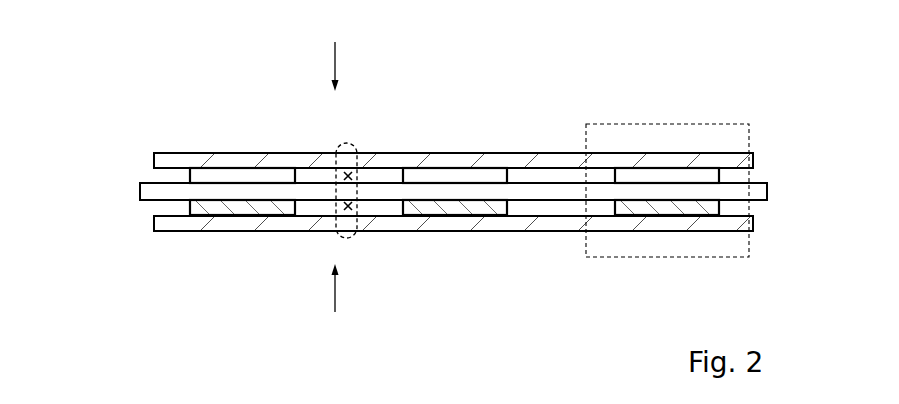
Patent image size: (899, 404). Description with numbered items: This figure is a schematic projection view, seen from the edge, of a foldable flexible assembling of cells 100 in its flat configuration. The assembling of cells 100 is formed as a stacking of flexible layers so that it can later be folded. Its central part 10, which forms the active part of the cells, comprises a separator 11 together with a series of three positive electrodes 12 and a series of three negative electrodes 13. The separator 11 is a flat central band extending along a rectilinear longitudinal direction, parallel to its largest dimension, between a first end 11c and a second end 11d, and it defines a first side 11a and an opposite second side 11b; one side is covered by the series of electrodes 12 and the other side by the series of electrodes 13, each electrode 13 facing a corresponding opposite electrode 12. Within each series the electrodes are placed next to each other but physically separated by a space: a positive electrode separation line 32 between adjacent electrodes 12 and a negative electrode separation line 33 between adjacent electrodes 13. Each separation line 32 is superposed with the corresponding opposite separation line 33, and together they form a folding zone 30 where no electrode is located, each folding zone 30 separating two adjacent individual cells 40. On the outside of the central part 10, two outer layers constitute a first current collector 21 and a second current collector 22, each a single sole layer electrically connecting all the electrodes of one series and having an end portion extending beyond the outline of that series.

The foldable flexible assembling of cells 100 is at (100, 72).
The central part 10 is at (134, 168).
The separator 11 is at (315, 192).
The first side 11a is at (381, 207).
The second side 11b is at (383, 176).
The first end 11c is at (155, 190).
The second end 11d is at (767, 190).
The positive electrode 12 is at (697, 210).
The negative electrode 13 is at (697, 175).
The first current collector 21 is at (508, 159).
The second current collector 22 is at (510, 226).
The folding zone 30 is at (342, 148).
The positive electrode separation line 32 is at (340, 215).
The negative electrode separation line 33 is at (333, 155).
The individual cell 40 is at (630, 124).